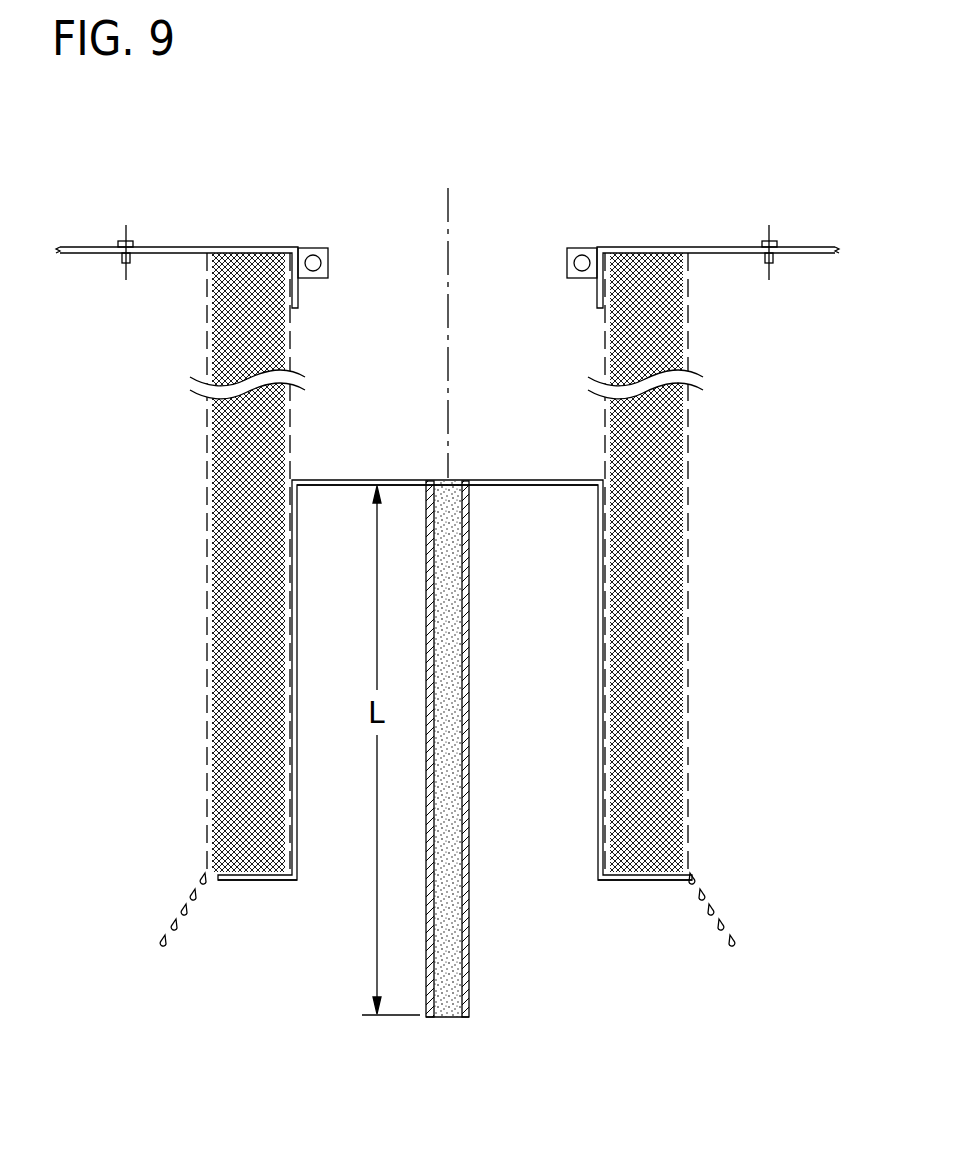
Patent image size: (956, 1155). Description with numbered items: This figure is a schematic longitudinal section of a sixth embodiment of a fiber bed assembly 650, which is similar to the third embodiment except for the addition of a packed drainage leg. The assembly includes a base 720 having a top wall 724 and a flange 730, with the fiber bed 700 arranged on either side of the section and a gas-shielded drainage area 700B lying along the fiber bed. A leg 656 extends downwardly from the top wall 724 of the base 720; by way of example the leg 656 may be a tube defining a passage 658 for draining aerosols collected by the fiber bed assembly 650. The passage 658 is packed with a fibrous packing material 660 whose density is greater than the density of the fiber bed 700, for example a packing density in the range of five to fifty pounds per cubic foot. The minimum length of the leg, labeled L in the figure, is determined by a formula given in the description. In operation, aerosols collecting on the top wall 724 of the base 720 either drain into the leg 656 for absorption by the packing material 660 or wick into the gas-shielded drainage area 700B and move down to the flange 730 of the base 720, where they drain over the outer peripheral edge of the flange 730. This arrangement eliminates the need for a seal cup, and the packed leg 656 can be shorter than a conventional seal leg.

The fiber bed assembly 650 is at (379, 181).
The fiber bed 700 is at (660, 458).
The gas-shielded drainage area 700B is at (241, 694).
The base 720 is at (455, 667).
The top wall 724 is at (392, 478).
The flange 730 is at (255, 882).
The leg 656 is at (499, 749).
The passage 658 is at (454, 884).
The fibrous packing material 660 is at (452, 991).